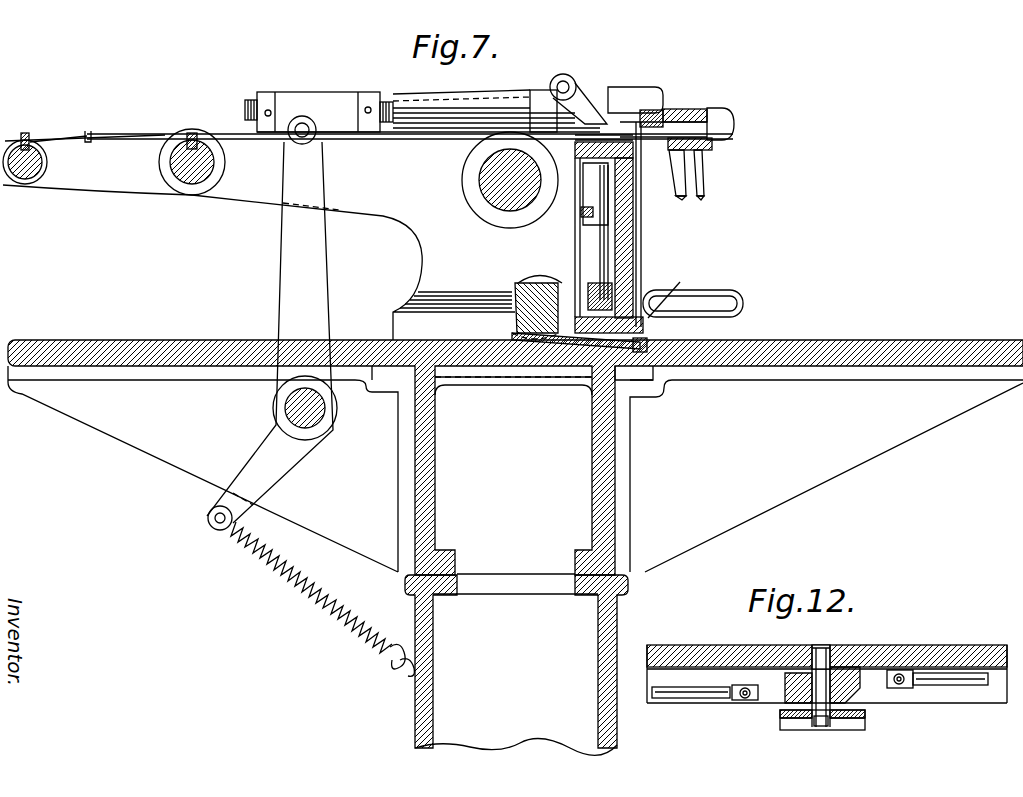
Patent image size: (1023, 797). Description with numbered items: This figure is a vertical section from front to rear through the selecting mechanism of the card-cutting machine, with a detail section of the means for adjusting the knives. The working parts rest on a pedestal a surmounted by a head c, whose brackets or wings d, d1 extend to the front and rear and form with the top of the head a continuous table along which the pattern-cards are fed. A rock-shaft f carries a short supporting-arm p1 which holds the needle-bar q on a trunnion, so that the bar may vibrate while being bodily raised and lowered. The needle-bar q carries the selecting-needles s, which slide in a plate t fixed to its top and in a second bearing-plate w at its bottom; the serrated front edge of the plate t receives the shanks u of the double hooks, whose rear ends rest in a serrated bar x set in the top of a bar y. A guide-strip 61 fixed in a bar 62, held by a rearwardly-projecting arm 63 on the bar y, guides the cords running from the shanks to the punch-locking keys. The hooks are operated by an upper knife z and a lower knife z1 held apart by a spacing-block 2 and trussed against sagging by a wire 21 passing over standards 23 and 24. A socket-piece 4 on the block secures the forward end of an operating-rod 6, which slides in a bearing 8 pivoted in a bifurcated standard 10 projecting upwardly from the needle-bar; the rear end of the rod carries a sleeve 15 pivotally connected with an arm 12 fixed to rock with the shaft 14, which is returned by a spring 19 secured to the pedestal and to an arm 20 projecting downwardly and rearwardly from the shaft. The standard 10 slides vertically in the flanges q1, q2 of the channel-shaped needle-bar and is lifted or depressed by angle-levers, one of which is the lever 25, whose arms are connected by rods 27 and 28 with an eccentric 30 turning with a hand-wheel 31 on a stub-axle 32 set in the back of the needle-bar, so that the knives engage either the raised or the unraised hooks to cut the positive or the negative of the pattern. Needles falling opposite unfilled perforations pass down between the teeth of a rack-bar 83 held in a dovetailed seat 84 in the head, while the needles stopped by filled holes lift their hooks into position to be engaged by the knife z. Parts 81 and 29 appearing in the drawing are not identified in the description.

In FIG. 7, the sleeve 15 is at (322, 100).
In FIG. 7, the operating-rod 6 is at (456, 102).
In FIG. 7, the bearing 8 is at (538, 90).
In FIG. 7, the bifurcated standard 10 is at (586, 108).
In FIG. 7, the socket-piece 4 is at (646, 88).
In FIG. 7, the upper knife z is at (690, 112).
In FIG. 7, the lower knife z1 is at (714, 146).
In FIG. 7, the standard 24 is at (672, 176).
In FIG. 7, the truss wire 21 is at (681, 197).
In FIG. 7, the spacing-block 2 is at (702, 165).
In FIG. 7, the standard 23 is at (702, 196).
In FIG. 7, the plate t is at (639, 145).
In FIG. 7, the needle-bar q is at (625, 222).
In FIG. 12, the needle-bar q is at (960, 656).
In FIG. 7, the flange q1 is at (592, 138).
In FIG. 7, the flange q2 is at (515, 318).
In FIG. 12, the flange q2 is at (724, 705).
In FIG. 7, the supporting-arm p1 is at (582, 212).
In FIG. 7, the rod 27 is at (585, 216).
In FIG. 12, the rod 27 is at (680, 694).
In FIG. 7, the angle-lever 25 is at (598, 258).
In FIG. 7, the selecting-needle s is at (645, 240).
In FIG. 7, the lever 81 is at (674, 288).
In FIG. 7, the bearing-plate w is at (588, 334).
In FIG. 7, the rack-bar 83 is at (670, 348).
In FIG. 7, the dovetailed seat 84 is at (655, 380).
In FIG. 7, the shank u is at (420, 133).
In FIG. 7, the rock-shaft f is at (500, 182).
In FIG. 7, the serrated bar x is at (194, 132).
In FIG. 7, the bar y is at (188, 186).
In FIG. 7, the guide-strip 61 is at (30, 140).
In FIG. 7, the bar 62 is at (25, 175).
In FIG. 7, the rearwardly-projecting arm 63 is at (110, 188).
In FIG. 7, the arm 12 is at (273, 319).
In FIG. 7, the rock-shaft 14 is at (322, 410).
In FIG. 7, the arm 20 is at (244, 489).
In FIG. 7, the spring 19 is at (312, 605).
In FIG. 7, the bracket d is at (143, 345).
In FIG. 7, the bracket d1 is at (903, 342).
In FIG. 7, the head c is at (513, 475).
In FIG. 7, the pedestal a is at (516, 665).
In FIG. 12, the eccentric 30 is at (842, 670).
In FIG. 12, the bearing block 29 is at (793, 698).
In FIG. 12, the hand-wheel 31 is at (868, 724).
In FIG. 12, the stub-axle 32 is at (821, 714).
In FIG. 12, the rod 28 is at (963, 688).